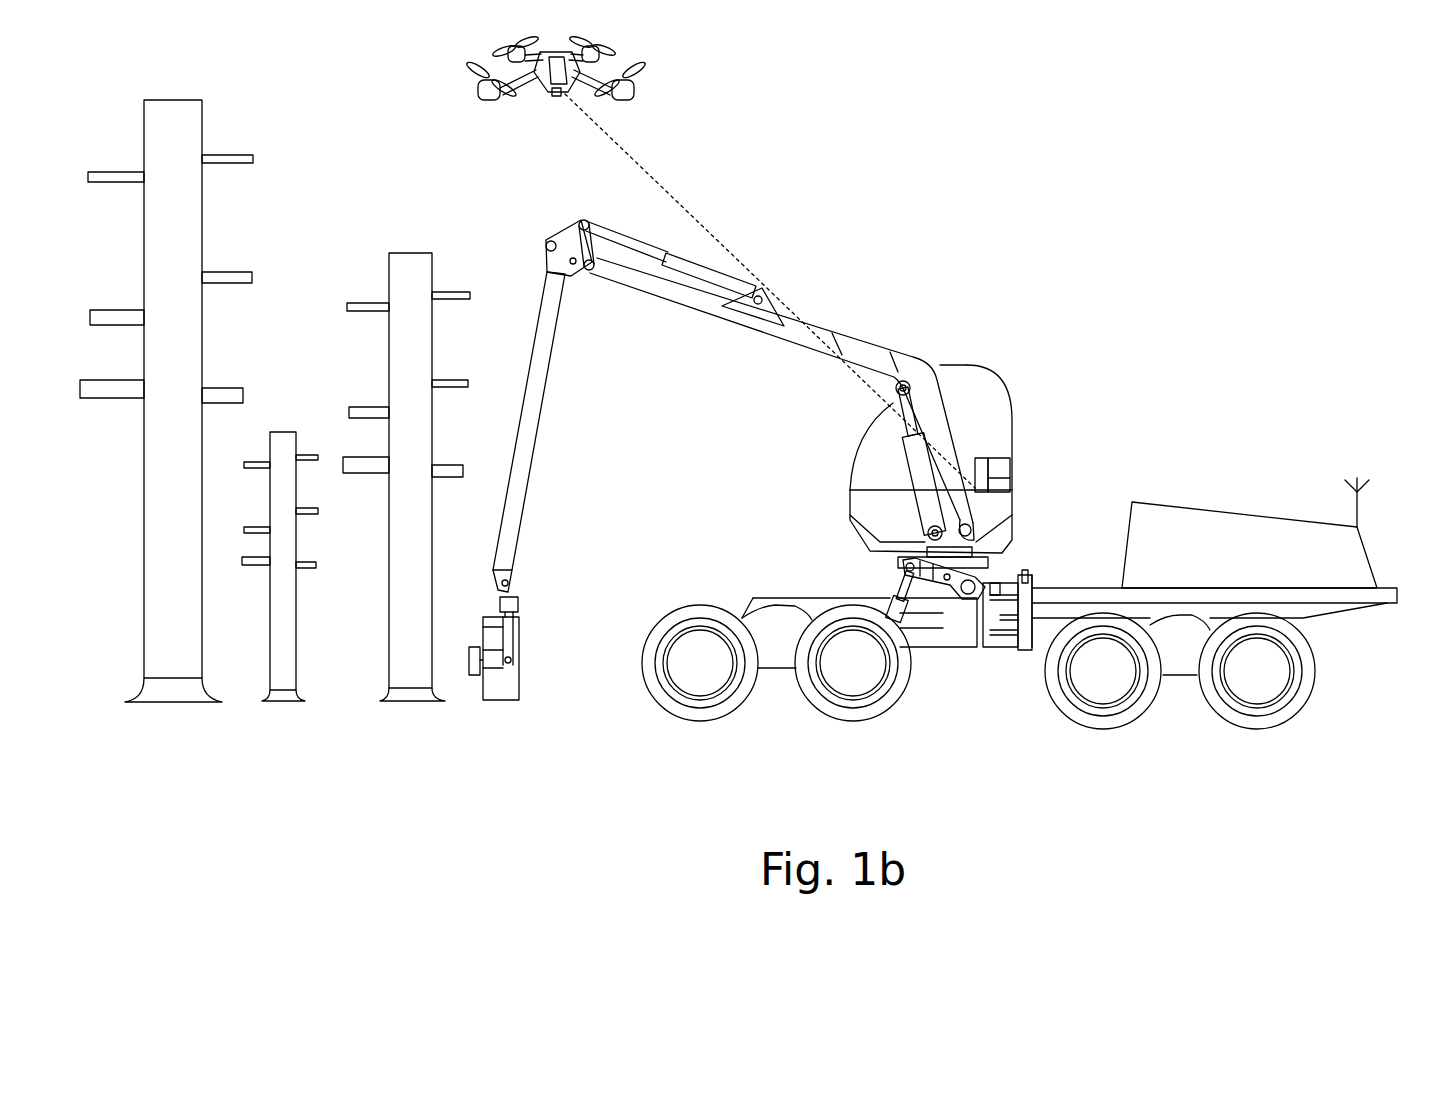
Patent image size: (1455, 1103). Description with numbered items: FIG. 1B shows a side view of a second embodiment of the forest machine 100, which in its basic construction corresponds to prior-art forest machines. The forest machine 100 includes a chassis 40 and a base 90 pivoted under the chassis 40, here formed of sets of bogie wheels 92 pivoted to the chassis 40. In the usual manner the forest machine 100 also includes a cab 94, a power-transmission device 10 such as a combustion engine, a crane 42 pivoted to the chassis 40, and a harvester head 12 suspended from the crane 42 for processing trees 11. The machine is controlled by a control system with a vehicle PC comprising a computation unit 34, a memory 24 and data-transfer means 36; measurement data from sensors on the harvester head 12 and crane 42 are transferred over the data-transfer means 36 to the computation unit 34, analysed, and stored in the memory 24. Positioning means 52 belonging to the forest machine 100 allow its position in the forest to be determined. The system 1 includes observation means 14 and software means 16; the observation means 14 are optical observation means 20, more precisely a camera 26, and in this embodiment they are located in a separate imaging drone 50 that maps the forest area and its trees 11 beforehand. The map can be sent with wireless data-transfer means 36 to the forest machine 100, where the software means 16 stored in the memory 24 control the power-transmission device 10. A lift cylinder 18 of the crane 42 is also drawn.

The system 1 is at (896, 454).
The power-transmission device 10 is at (1188, 490).
The trees 11 is at (168, 535).
The harvester head 12 is at (456, 606).
The observation means 14 is at (579, 116).
The software means 16 is at (975, 466).
The hydraulic cylinder 18 is at (680, 255).
The optical observation means 20 is at (528, 111).
The memory 24 is at (1002, 490).
The camera 26 is at (555, 97).
The computation unit 34 is at (1000, 470).
The data-transfer means 36 is at (752, 276).
The chassis 40 is at (1062, 574).
The crane 42 is at (724, 262).
The imaging drone 50 is at (472, 63).
The positioning means 52 is at (1396, 470).
The base 90 is at (1044, 672).
The bogie wheels 92 is at (781, 690).
The cab 94 is at (976, 345).
The forest machine 100 is at (766, 410).